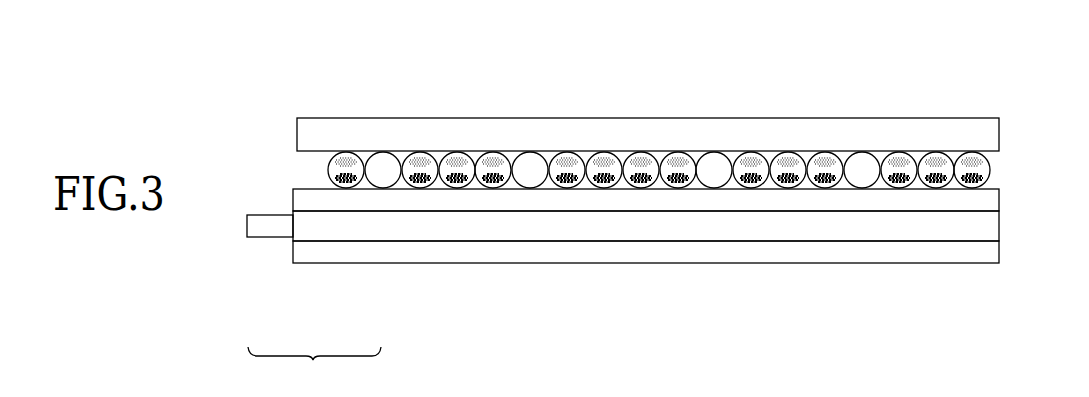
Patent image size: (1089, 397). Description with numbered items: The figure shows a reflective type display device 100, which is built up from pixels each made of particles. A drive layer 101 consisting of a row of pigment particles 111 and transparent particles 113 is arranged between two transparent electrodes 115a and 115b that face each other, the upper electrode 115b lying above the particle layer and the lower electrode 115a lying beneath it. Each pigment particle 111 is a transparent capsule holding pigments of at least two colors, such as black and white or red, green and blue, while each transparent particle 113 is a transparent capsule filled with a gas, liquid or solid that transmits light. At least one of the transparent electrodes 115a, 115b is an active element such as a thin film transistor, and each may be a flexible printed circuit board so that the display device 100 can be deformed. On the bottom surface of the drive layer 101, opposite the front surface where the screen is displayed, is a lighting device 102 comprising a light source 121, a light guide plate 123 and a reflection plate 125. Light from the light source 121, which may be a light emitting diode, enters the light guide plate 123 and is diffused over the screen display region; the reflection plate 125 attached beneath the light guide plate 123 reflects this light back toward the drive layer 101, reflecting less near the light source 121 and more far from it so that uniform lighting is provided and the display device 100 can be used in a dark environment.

The display device 100 is at (1011, 76).
The drive layer 101 is at (999, 177).
The lighting device 102 is at (314, 369).
The pigment particle 111 is at (453, 160).
The transparent particle 113 is at (384, 160).
The transparent electrode 115a is at (997, 200).
The transparent electrode 115b is at (304, 133).
The light source 121 is at (270, 231).
The light guide plate 123 is at (325, 232).
The reflection plate 125 is at (380, 250).